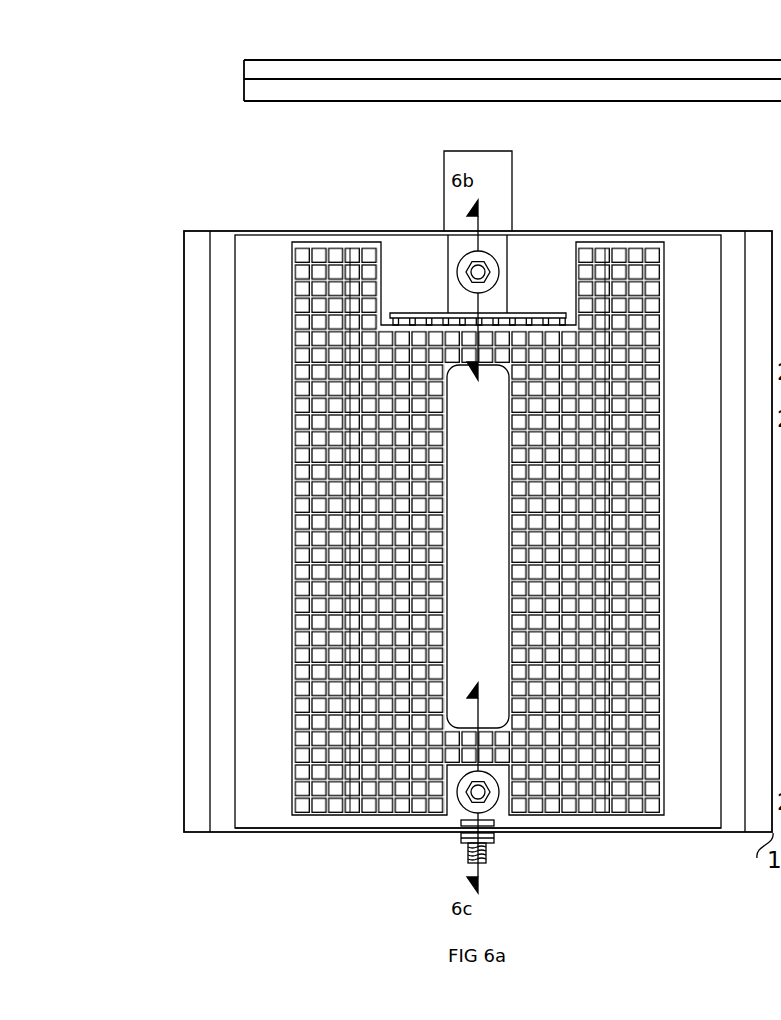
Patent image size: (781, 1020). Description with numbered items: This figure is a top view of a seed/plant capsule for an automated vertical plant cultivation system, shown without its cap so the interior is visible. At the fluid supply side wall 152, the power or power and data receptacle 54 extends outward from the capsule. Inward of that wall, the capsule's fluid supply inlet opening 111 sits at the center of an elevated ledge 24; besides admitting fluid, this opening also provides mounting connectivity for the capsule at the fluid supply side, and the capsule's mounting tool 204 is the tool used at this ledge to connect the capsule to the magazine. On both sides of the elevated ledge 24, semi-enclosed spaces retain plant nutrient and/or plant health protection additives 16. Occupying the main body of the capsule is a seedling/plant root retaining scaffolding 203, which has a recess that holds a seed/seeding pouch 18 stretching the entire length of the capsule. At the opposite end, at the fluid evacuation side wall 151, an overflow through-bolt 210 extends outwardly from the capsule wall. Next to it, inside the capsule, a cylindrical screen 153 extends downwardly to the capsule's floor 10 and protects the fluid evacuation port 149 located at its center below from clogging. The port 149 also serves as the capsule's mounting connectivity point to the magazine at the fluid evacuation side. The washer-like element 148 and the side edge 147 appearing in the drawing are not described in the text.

The mounting tool 204 is at (278, 101).
The power or power and data receptacle 54 is at (478, 170).
The plant nutrient and/or plant health protection additives 16 is at (403, 247).
The fluid supply side wall 152 is at (677, 230).
The upper washer 148 is at (457, 272).
The fluid supply inlet opening 111 is at (480, 272).
The elevated ledge 24 is at (482, 306).
The seedling/plant root retaining scaffolding 203 is at (323, 546).
The seed/seeding pouch 18 is at (475, 513).
The side edge of base plate 147 is at (182, 575).
The fluid evacuation port 149 is at (487, 777).
The floor 10 is at (462, 768).
The cylindrical screen 153 is at (462, 808).
The overflow through-bolt 210 is at (488, 853).
The fluid evacuation side wall 151 is at (648, 833).